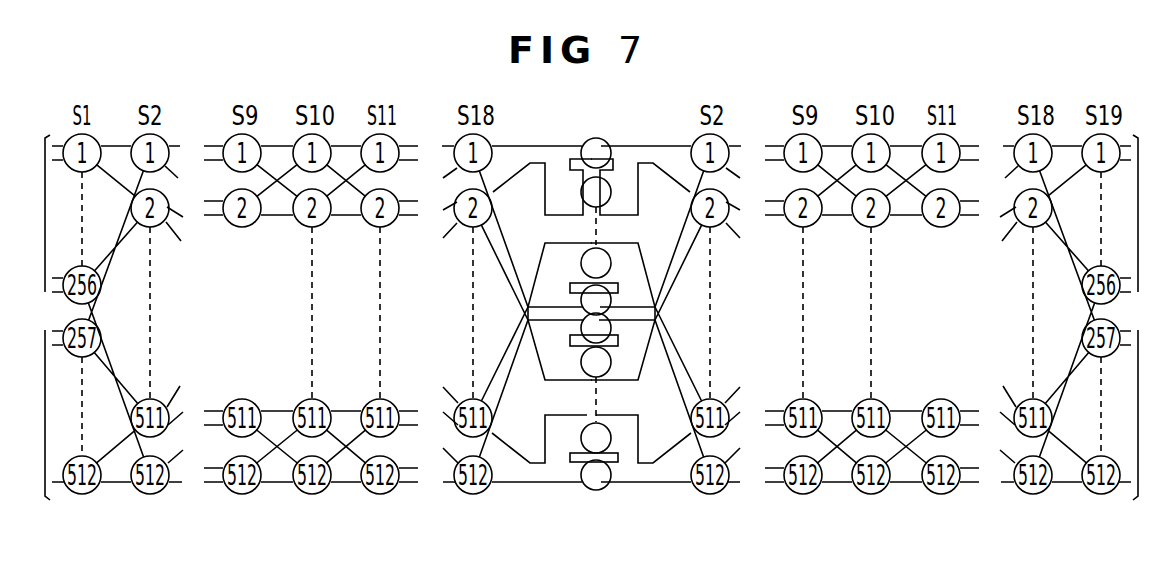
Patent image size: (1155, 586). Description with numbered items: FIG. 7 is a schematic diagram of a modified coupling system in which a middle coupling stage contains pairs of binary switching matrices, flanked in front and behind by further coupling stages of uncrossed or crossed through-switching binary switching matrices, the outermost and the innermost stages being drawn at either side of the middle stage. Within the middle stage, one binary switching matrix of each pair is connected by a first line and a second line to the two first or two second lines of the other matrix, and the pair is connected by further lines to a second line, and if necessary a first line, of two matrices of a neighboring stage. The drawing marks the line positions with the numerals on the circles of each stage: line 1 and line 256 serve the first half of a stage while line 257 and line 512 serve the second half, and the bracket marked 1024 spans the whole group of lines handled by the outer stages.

The line 1 of switching stage 1 is at (614, 192).
The line 256 of switching stage 256 is at (622, 296).
The line 257 of switching stage 257 is at (616, 362).
The line 512 of switching stage 512 is at (607, 500).
The 1024-line switching network group 1024 is at (588, 317).